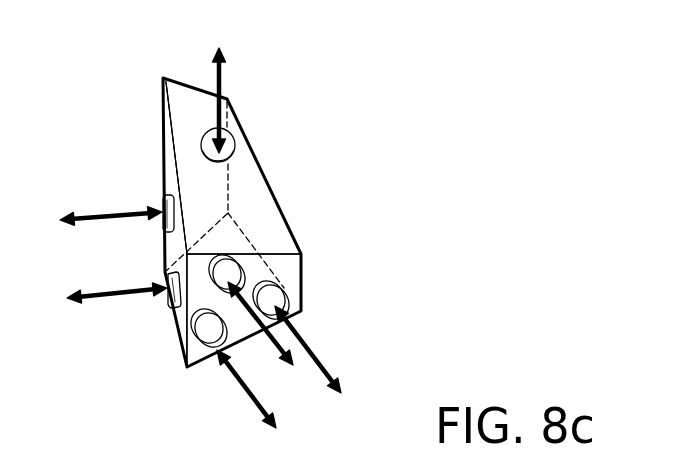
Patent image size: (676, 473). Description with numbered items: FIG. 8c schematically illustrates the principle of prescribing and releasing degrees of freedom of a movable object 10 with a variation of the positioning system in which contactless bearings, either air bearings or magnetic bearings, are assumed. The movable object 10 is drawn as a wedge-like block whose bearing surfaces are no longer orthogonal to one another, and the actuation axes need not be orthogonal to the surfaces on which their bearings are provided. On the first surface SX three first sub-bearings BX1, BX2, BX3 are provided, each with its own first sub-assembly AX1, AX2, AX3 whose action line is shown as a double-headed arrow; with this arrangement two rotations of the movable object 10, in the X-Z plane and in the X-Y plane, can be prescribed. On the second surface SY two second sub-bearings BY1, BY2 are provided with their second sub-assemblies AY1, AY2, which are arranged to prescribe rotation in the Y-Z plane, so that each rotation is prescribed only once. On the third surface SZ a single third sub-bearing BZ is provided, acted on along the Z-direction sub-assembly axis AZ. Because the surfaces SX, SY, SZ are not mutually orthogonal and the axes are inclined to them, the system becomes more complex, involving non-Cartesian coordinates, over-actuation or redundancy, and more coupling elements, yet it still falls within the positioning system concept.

The movable object 10 is at (163, 145).
The third sub-bearing BZ is at (206, 133).
The Z-direction sub-assembly AZ is at (218, 87).
The third surface SZ is at (244, 188).
The first surface SX is at (284, 265).
The second surface SY is at (178, 328).
The first one of the second sub-bearings BY1 is at (162, 203).
The first one of the second sub-assemblies AY1 is at (91, 220).
The second one of the second sub-bearings BY2 is at (165, 281).
The second one of the second sub-assemblies AY2 is at (97, 296).
The third one of the first sub-bearings BX3 is at (246, 284).
The second one of the first sub-bearings BX2 is at (289, 316).
The first one of the first sub-bearings BX1 is at (215, 351).
The third one of the first sub-assemblies AX3 is at (267, 338).
The second one of the first sub-assemblies AX2 is at (329, 361).
The first one of the first sub-assemblies AX1 is at (257, 402).